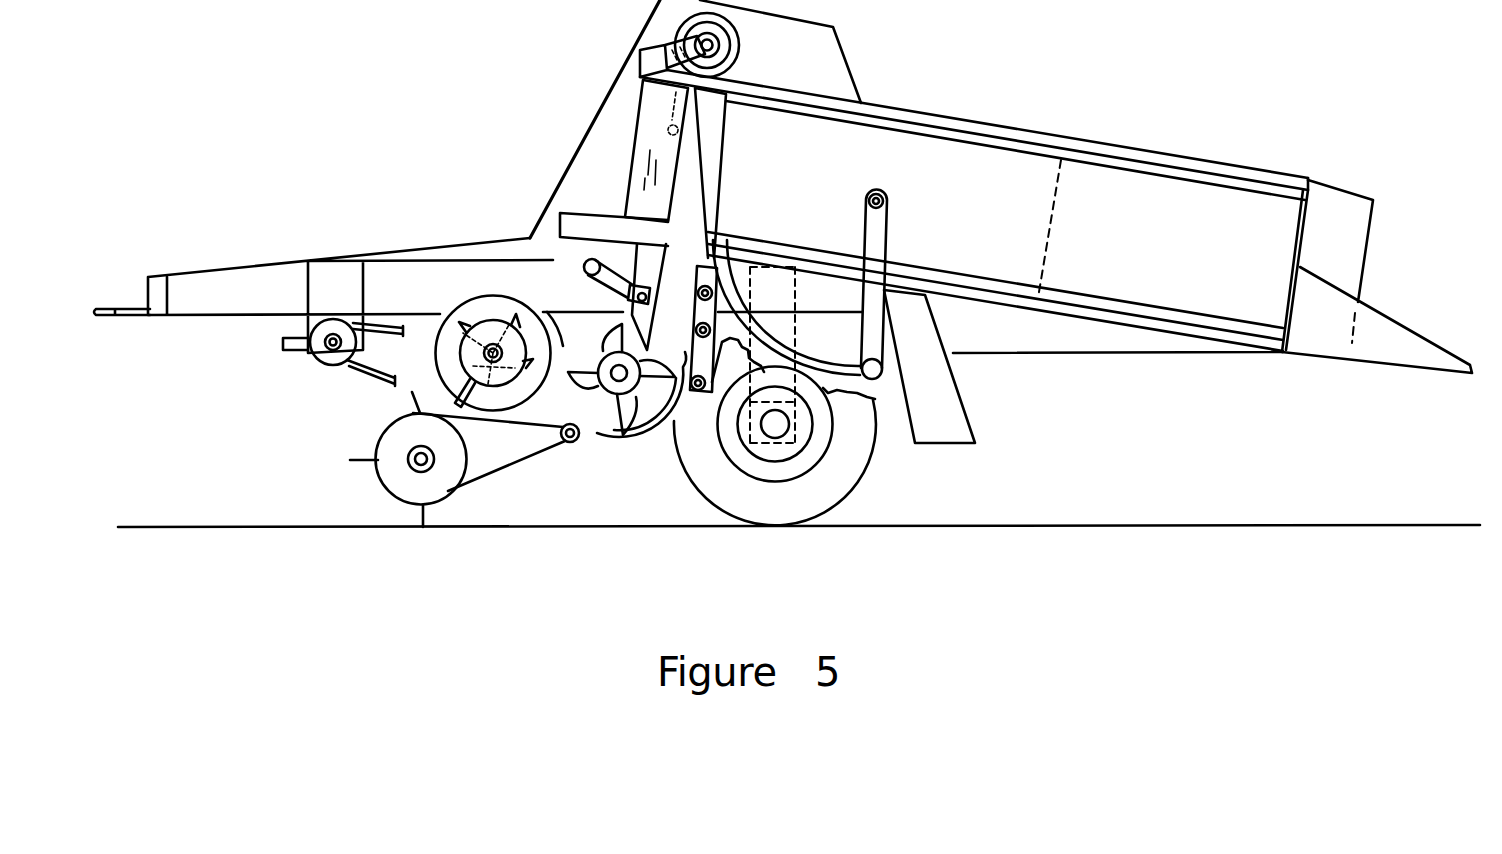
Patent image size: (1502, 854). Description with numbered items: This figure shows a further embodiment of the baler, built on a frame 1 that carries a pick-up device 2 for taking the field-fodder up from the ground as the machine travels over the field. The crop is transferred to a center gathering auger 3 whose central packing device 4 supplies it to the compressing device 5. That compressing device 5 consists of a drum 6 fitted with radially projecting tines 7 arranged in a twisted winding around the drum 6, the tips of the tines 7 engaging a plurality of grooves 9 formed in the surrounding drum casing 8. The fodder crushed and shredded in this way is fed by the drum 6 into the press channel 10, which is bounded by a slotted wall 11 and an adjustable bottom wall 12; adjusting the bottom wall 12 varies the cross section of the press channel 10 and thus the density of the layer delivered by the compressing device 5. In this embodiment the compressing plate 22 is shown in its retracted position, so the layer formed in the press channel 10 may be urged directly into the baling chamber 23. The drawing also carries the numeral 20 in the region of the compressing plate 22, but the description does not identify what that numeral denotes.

The frame 1 is at (377, 272).
The pick-up device 2 is at (400, 487).
The center gathering auger 3 is at (498, 397).
The central packing device 4 is at (530, 368).
The compressing device 5 is at (522, 230).
The drum 6 is at (607, 381).
The tines 7 is at (627, 421).
The drum casing 8 is at (655, 428).
The grooves 9 is at (678, 423).
The press channel 10 is at (684, 319).
The slotted wall 11 is at (622, 312).
The adjustable bottom wall 12 is at (713, 290).
The hydraulic cylinder 20 is at (675, 112).
The compressing plate 22 is at (643, 150).
The baling chamber 23 is at (985, 134).